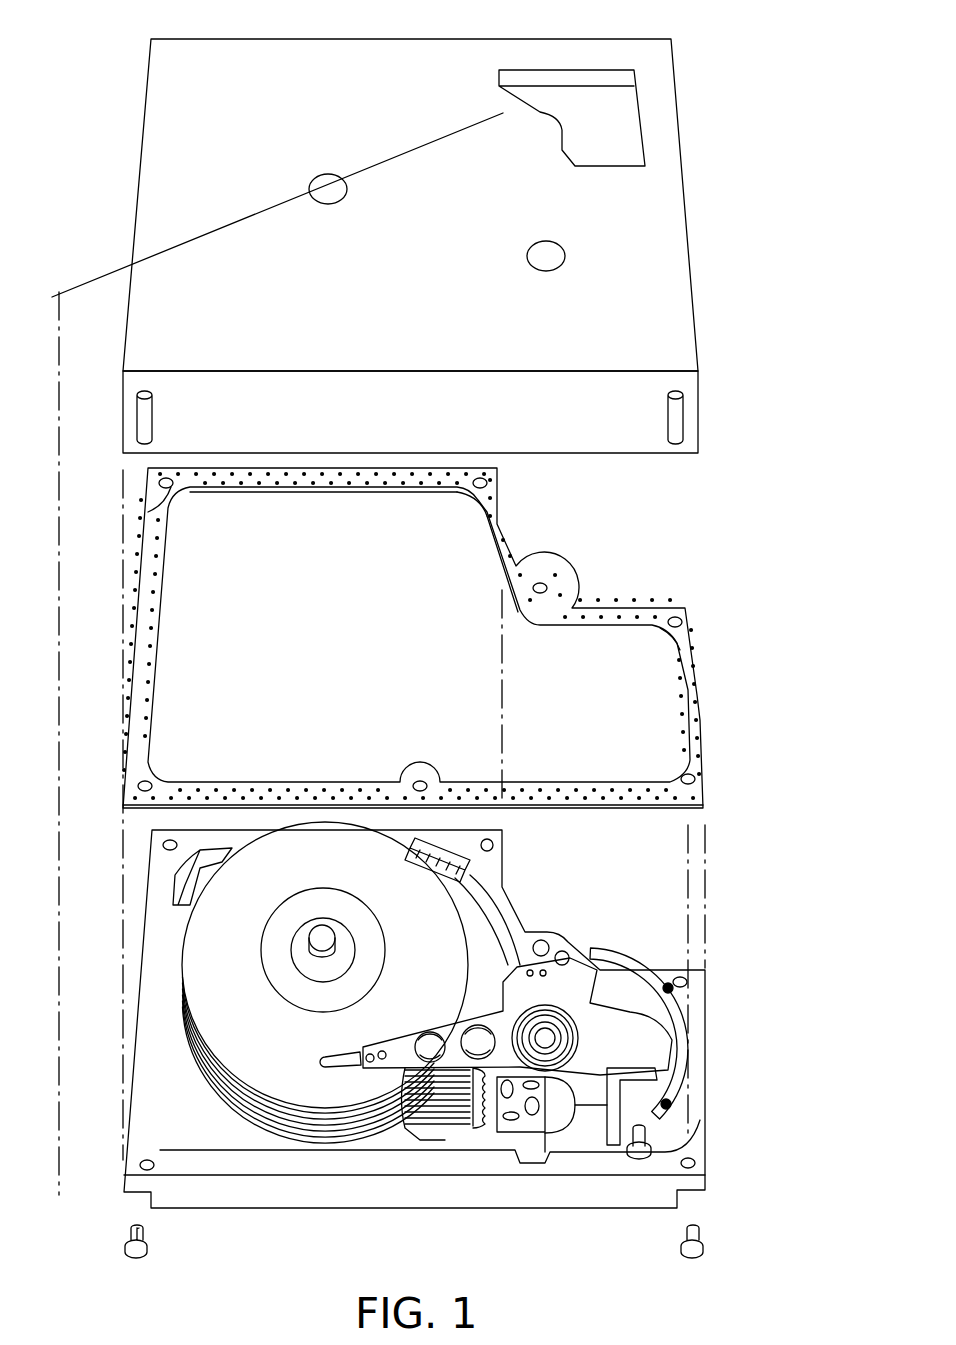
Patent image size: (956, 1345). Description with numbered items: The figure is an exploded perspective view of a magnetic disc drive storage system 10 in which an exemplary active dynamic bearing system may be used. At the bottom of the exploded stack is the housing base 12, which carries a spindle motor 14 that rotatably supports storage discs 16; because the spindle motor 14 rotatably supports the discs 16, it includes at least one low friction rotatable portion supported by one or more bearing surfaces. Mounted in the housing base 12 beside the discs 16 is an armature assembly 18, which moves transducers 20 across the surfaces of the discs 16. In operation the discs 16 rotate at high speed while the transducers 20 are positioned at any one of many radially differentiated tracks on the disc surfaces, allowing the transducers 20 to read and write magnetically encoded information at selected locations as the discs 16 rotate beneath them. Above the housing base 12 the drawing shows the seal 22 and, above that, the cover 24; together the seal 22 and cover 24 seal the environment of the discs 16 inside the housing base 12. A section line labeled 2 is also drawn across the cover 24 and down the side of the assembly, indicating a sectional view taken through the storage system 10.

The storage system 10 is at (410, 629).
The section line 2- 2 is at (480, 145).
The cover 24 is at (688, 233).
The seal 22 is at (700, 762).
The housing base 12 is at (705, 1163).
The spindle motor 14 is at (300, 965).
The storage discs 16 is at (312, 1103).
The armature assembly 18 is at (455, 1145).
The transducers 20 is at (352, 1040).